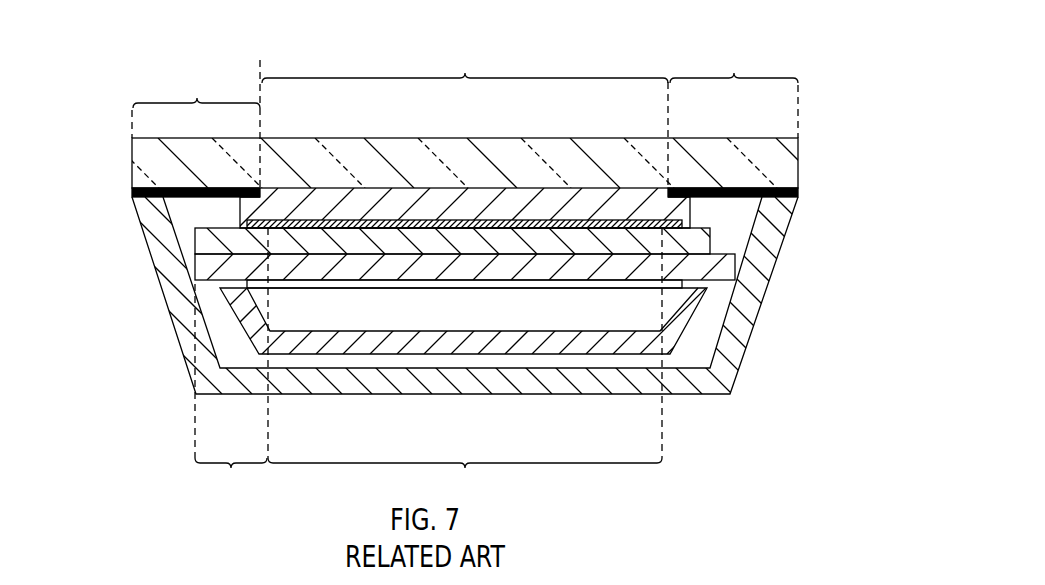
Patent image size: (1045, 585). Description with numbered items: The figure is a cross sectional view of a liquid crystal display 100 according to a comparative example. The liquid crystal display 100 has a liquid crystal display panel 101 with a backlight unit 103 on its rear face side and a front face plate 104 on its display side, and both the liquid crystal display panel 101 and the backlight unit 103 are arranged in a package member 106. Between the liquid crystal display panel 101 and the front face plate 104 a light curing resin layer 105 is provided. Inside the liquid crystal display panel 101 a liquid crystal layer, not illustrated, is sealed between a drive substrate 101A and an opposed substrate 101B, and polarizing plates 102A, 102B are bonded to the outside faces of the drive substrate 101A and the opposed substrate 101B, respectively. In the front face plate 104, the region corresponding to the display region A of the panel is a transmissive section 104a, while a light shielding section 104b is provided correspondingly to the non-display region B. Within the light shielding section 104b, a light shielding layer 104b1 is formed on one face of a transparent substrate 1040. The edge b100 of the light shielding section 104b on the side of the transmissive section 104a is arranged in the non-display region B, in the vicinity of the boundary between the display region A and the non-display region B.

The liquid crystal display 100 is at (174, 64).
The front face plate 104 is at (807, 163).
The transmissive section 104a is at (465, 116).
The light shielding section 104b is at (465, 90).
The light shielding layer 104b1 is at (206, 200).
The transparent substrate 1040 is at (748, 140).
The edge b100 is at (260, 112).
The light curing resin layer 105 is at (388, 197).
The liquid crystal display panel 101 is at (512, 239).
The drive substrate 101A is at (727, 258).
The opposed substrate 101B is at (690, 240).
The polarizing plate 102A is at (608, 289).
The polarizing plate 102B is at (542, 221).
The backlight unit 103 is at (481, 350).
The package member 106 is at (352, 387).
The display region A is at (465, 363).
The non-display region B is at (231, 363).